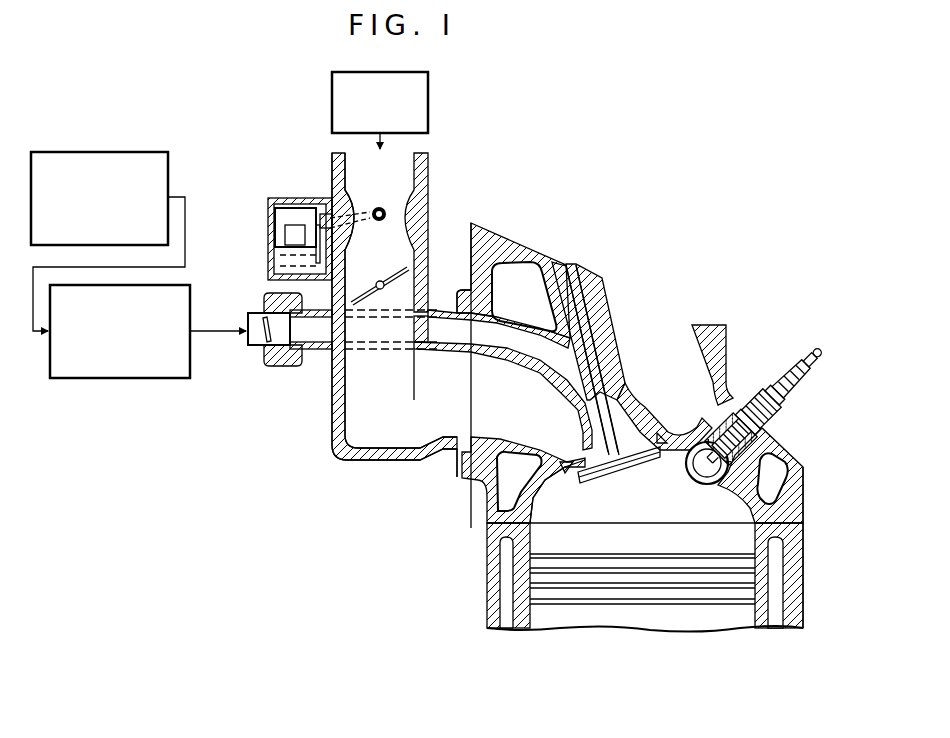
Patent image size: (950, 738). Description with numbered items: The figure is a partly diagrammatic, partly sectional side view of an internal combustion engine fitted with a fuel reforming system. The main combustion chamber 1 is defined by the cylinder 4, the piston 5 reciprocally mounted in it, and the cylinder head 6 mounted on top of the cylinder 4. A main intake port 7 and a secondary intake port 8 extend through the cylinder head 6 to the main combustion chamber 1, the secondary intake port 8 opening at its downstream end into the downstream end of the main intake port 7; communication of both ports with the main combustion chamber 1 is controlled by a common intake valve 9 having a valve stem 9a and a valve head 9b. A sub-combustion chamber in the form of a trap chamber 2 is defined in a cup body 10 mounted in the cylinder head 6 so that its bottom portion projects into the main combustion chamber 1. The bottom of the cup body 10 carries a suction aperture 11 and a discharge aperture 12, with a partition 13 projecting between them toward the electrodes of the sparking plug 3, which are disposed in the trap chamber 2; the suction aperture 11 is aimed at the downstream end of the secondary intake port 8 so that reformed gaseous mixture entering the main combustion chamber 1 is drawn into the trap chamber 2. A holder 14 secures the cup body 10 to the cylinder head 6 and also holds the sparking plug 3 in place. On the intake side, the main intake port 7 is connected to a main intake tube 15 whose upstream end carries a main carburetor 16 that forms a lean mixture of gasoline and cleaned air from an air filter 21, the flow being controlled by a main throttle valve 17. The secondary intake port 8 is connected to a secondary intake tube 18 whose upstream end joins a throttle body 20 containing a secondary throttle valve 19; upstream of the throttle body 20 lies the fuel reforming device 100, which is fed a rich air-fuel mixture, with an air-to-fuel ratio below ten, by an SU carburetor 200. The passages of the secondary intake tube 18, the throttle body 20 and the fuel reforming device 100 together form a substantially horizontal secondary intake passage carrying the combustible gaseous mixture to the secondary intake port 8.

The main combustion chamber 1 is at (642, 517).
The trap chamber 2 is at (700, 440).
The sparking plug 3 is at (766, 405).
The cylinder 4 is at (790, 565).
The piston 5 is at (627, 618).
The cylinder head 6 is at (805, 470).
The main intake port 7 is at (530, 418).
The secondary intake port 8 is at (504, 341).
The intake valve 9 is at (603, 440).
The valve stem 9a is at (600, 278).
The valve head 9b is at (598, 482).
The cup body 10 is at (722, 478).
The suction aperture 11 is at (700, 468).
The discharge aperture 12 is at (709, 485).
The partition 13 is at (702, 481).
The holder 14 is at (733, 410).
The main intake tube 15 is at (390, 456).
The main carburetor 16 is at (328, 196).
The main throttle valve 17 is at (409, 269).
The secondary intake tube 18 is at (325, 350).
The secondary throttle valve 19 is at (258, 312).
The throttle body 20 is at (281, 356).
The air filter 21 is at (428, 101).
The fuel reforming device 100 is at (140, 378).
The SU carburetor 200 is at (168, 168).